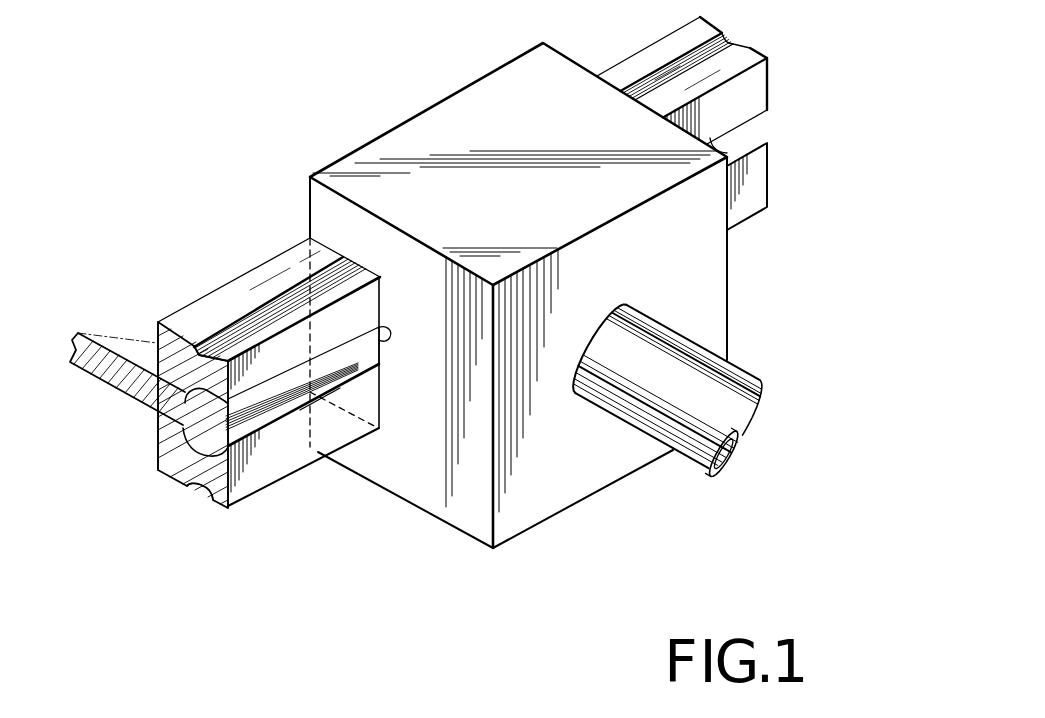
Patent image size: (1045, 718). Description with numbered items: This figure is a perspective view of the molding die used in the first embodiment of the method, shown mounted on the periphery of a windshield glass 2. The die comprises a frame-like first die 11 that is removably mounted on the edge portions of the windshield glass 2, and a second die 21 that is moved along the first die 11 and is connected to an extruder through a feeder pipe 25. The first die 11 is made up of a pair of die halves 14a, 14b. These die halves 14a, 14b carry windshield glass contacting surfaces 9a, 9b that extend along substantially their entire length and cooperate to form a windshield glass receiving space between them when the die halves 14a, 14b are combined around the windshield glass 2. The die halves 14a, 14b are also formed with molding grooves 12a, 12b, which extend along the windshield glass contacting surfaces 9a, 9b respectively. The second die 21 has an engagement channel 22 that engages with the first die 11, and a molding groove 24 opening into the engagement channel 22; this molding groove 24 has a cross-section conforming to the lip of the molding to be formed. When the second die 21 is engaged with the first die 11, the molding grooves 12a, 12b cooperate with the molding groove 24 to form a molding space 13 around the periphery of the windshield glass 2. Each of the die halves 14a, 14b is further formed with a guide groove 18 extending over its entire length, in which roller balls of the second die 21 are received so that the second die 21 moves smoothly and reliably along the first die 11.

The windshield glass 2 is at (70, 364).
The windshield glass contacting surface 9a is at (183, 380).
The windshield glass contacting surface 9b is at (182, 445).
The first die 11 is at (63, 538).
The molding groove 12a is at (226, 462).
The molding groove 12b is at (232, 505).
The molding space 13 is at (361, 361).
The die half 14a is at (155, 383).
The die half 14b is at (172, 405).
The guide groove 18 is at (240, 327).
The second die 21 is at (432, 110).
The engagement channel 22 is at (375, 372).
The molding groove 24 is at (388, 338).
The feeder pipe 25 is at (732, 378).